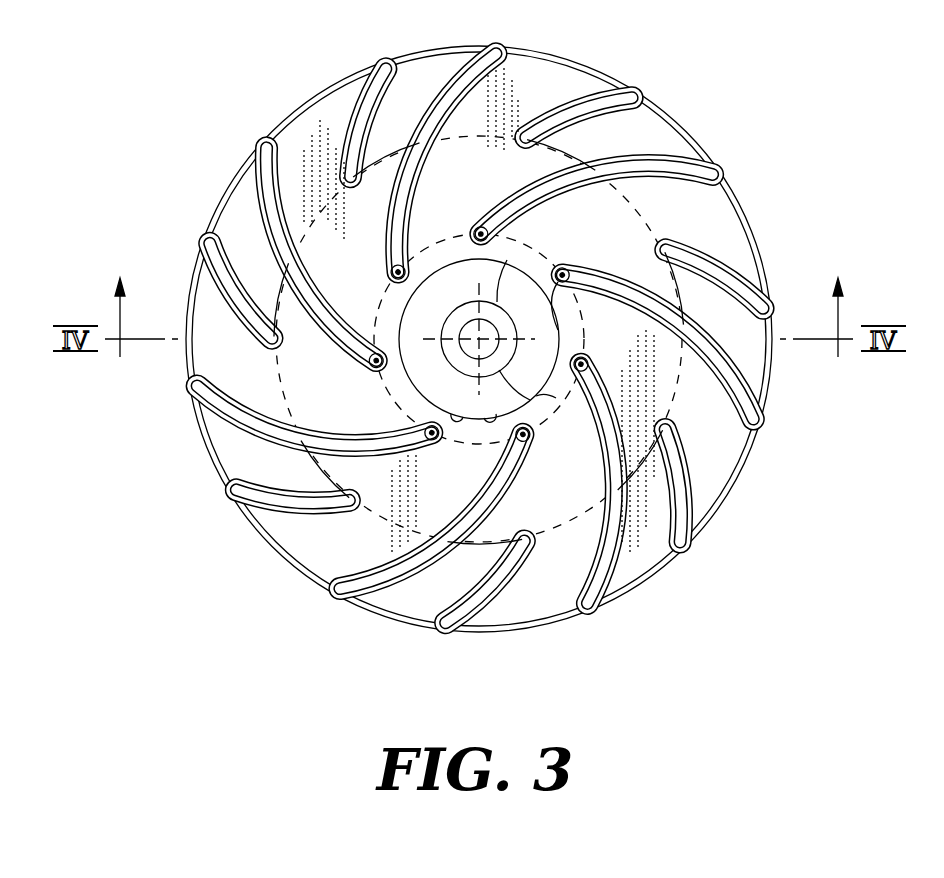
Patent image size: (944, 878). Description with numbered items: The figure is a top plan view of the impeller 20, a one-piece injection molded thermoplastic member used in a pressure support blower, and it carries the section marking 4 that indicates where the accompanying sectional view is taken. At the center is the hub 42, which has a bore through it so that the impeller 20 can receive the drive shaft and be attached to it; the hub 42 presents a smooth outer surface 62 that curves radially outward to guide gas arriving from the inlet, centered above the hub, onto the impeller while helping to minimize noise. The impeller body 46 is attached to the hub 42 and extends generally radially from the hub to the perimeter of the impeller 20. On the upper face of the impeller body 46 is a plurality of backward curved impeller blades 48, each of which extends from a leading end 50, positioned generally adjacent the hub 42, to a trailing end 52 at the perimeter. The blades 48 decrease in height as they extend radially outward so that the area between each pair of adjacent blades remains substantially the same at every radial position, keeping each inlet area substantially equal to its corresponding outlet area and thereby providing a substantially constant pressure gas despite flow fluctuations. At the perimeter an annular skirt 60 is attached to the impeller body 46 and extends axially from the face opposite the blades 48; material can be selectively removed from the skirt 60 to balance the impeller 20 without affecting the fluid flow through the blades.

The shaft opening 4 is at (538, 405).
The impeller 20 is at (252, 620).
The hub 42 is at (507, 262).
The impeller body 46 is at (617, 238).
The impeller blades 48 is at (458, 72).
The leading end 50 is at (478, 230).
The trailing end 52 is at (512, 45).
The annular skirt 60 is at (268, 552).
The smooth outer surface 62 is at (430, 378).